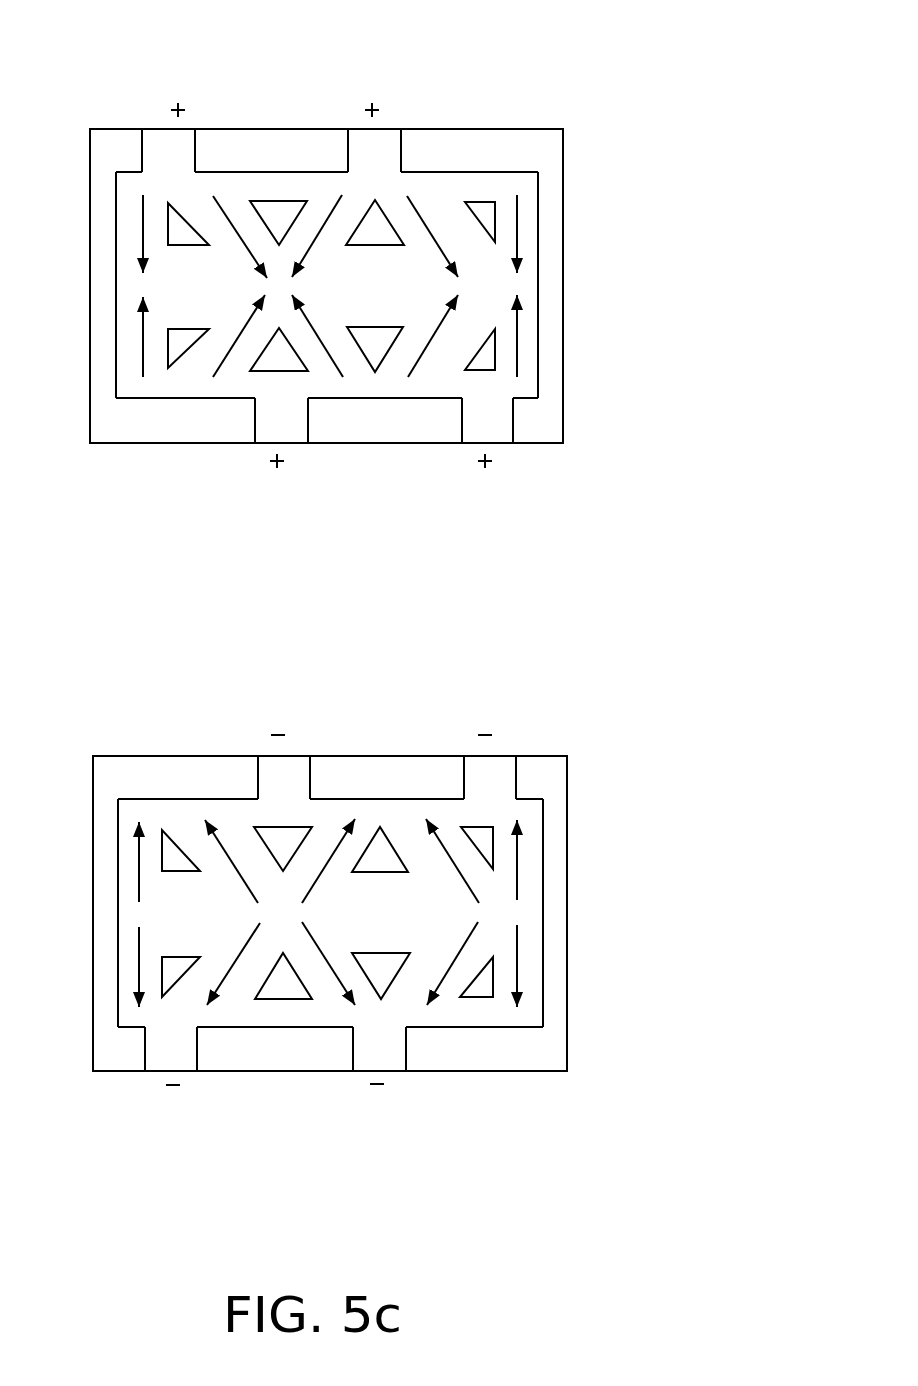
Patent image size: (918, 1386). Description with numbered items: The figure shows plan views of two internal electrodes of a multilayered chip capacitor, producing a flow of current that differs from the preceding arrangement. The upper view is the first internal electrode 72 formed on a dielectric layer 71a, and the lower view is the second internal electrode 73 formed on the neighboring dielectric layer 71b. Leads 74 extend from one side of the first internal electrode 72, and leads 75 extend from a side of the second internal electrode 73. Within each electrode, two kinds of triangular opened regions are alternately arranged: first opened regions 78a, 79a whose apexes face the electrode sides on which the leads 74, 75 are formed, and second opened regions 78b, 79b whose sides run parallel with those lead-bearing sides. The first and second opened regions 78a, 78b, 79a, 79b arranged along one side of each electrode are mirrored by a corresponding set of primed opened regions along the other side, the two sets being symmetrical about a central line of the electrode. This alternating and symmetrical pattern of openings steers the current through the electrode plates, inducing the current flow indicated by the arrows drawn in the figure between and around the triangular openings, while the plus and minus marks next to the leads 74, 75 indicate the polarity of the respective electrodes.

The dielectric layer 71a is at (437, 432).
The dielectric layer 71b is at (512, 1055).
The first internal electrode 72 is at (365, 385).
The second internal electrode 73 is at (442, 1015).
The lead 74 is at (163, 142).
The lead 75 is at (297, 762).
The first opened region 78a is at (186, 225).
The second opened region 78b is at (272, 213).
The first opened region 79a is at (172, 845).
The second opened region 79b is at (295, 840).